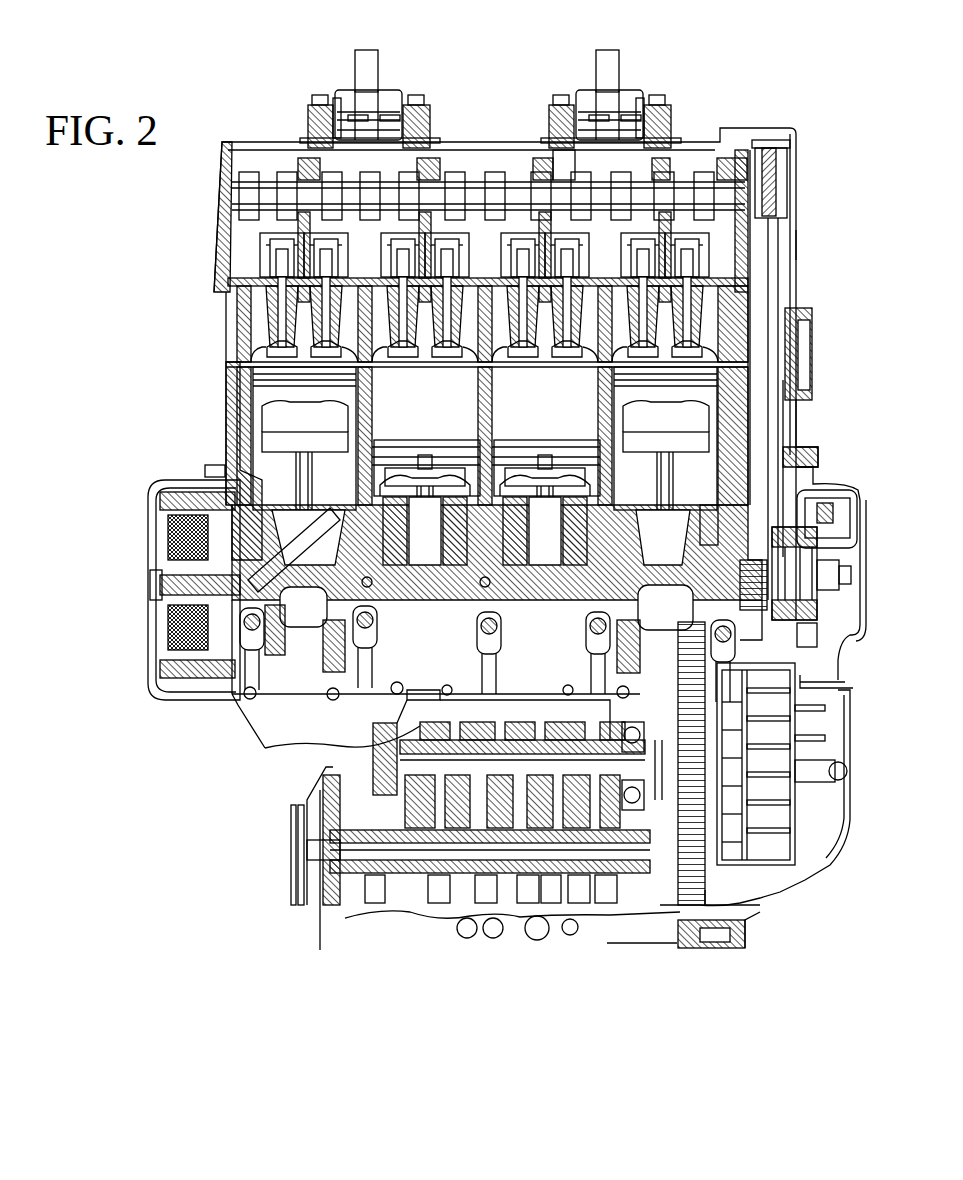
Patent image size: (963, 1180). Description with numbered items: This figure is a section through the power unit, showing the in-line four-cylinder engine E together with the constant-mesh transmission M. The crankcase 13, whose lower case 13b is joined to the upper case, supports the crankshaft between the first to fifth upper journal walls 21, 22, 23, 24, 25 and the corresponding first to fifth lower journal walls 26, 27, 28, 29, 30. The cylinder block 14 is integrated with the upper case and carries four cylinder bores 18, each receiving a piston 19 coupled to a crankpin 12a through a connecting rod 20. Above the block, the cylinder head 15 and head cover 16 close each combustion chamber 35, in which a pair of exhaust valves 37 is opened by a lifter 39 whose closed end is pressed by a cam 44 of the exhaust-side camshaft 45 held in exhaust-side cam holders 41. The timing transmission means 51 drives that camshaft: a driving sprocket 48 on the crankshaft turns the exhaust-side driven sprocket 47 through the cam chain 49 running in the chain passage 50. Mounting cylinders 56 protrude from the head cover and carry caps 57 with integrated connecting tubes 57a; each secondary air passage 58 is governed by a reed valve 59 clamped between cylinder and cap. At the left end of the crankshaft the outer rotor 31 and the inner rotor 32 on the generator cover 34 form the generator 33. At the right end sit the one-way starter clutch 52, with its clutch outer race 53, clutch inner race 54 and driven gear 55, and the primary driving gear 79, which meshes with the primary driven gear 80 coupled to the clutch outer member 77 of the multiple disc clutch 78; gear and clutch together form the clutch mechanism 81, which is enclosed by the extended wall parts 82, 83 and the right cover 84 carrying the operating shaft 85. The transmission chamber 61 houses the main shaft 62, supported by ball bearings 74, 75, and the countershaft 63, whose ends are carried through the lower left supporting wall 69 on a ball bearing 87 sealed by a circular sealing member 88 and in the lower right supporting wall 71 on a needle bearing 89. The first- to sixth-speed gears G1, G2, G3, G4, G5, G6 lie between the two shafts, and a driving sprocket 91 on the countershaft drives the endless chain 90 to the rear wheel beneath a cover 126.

The crankpin 12a is at (330, 515).
The crankcase 13 is at (235, 707).
The lower case 13b is at (318, 698).
The cylinder block 14 is at (794, 422).
The cylinder head 15 is at (790, 258).
The head cover 16 is at (790, 165).
The cylinder bore 18 is at (357, 413).
The piston 19 is at (372, 384).
The connecting rod 20 is at (302, 442).
The first upper journal wall 21 is at (296, 510).
The second upper journal wall 22 is at (382, 497).
The third upper journal wall 23 is at (442, 460).
The fourth upper journal wall 24 is at (570, 470).
The fifth upper journal wall 25 is at (722, 530).
The first lower journal wall 26 is at (292, 648).
The second lower journal wall 27 is at (322, 638).
The third lower journal wall 28 is at (483, 590).
The fourth lower journal wall 29 is at (655, 632).
The fifth lower journal wall 30 is at (840, 664).
The outer rotor 31 is at (215, 465).
The inner rotor 32 is at (185, 680).
The generator 33 is at (190, 492).
The generator cover 34 is at (170, 480).
The combustion chamber 35 is at (436, 393).
The exhaust valve 37 is at (450, 332).
The lifter 39 is at (312, 216).
The exhaust-side cam holder 41 is at (440, 170).
The cam 44 is at (563, 158).
The exhaust-side camshaft 45 is at (497, 186).
The exhaust-side driven sprocket 47 is at (786, 181).
The driving sprocket 48 is at (760, 560).
The cam chain 49 is at (814, 330).
The chain passage 50 is at (812, 372).
The timing transmission means 51 is at (777, 300).
The one-way starter clutch 52 is at (818, 633).
The clutch outer race 53 is at (806, 496).
The clutch inner race 54 is at (857, 547).
The driven gear 55 is at (853, 690).
The mounting cylinder 56 is at (310, 114).
The cap 57 is at (352, 90).
The connecting tube 57a is at (372, 80).
The secondary air passage 58 is at (304, 130).
The reed valve 59 is at (368, 114).
The transmission chamber 61 is at (505, 726).
The main shaft 62 is at (540, 736).
The countershaft 63 is at (356, 878).
The lower left supporting wall 69 is at (336, 764).
The lower right supporting wall 71 is at (641, 890).
The ball bearing 74 is at (405, 722).
The ball bearing 75 is at (636, 722).
The clutch outer member 77 is at (742, 892).
The clutch 78 is at (800, 862).
The primary driving gear 79 is at (660, 478).
The primary driven gear 80 is at (745, 945).
The clutch mechanism 81 is at (812, 952).
The extended wall part 82 is at (806, 448).
The extended wall part 83 is at (705, 948).
The right cover 84 is at (832, 852).
The operating shaft 85 is at (828, 785).
The ball bearing 87 is at (410, 900).
The circular sealing member 88 is at (372, 904).
The needle bearing 89 is at (641, 812).
The endless chain 90 is at (312, 795).
The driving sprocket 91 is at (326, 935).
The cover 126 is at (290, 852).
The engine E is at (798, 243).
The transmission M is at (528, 912).
The first-speed gear G1 is at (606, 908).
The second-speed gear G2 is at (437, 906).
The third-speed gear G3 is at (522, 721).
The fourth-speed gear G4 is at (547, 906).
The fifth-speed gear G5 is at (578, 912).
The sixth-speed gear G6 is at (483, 906).